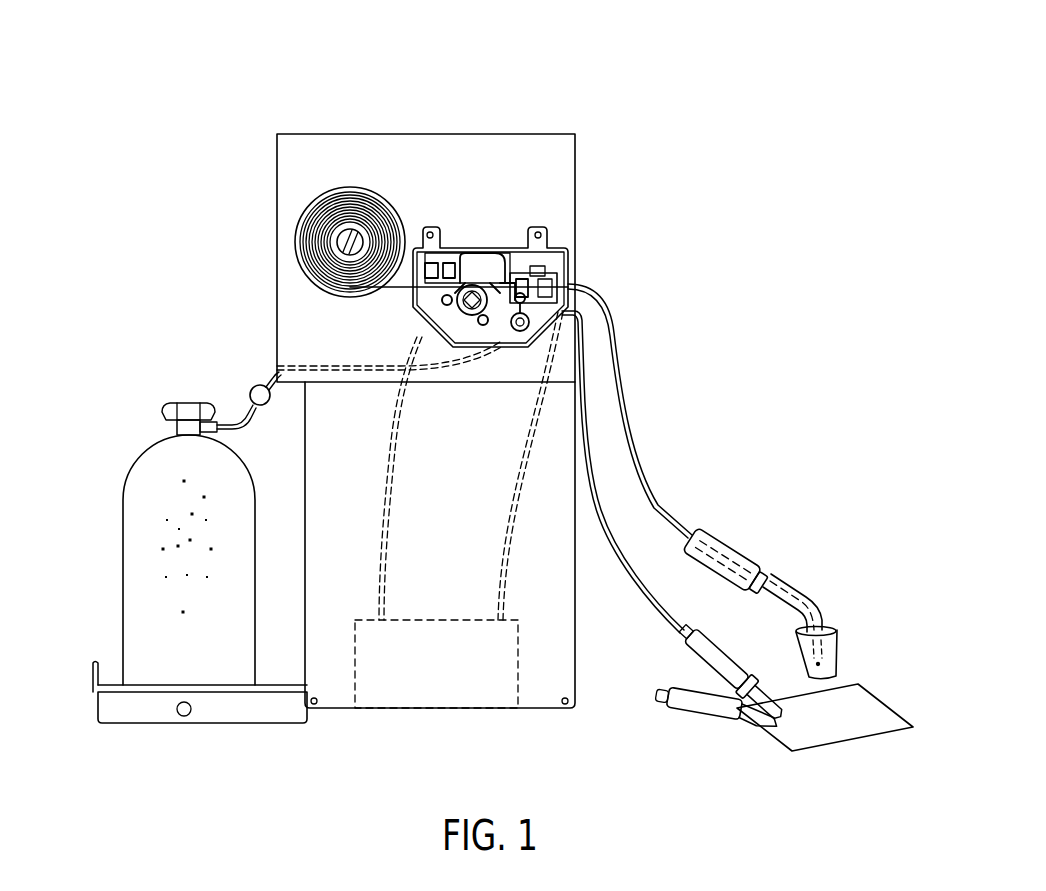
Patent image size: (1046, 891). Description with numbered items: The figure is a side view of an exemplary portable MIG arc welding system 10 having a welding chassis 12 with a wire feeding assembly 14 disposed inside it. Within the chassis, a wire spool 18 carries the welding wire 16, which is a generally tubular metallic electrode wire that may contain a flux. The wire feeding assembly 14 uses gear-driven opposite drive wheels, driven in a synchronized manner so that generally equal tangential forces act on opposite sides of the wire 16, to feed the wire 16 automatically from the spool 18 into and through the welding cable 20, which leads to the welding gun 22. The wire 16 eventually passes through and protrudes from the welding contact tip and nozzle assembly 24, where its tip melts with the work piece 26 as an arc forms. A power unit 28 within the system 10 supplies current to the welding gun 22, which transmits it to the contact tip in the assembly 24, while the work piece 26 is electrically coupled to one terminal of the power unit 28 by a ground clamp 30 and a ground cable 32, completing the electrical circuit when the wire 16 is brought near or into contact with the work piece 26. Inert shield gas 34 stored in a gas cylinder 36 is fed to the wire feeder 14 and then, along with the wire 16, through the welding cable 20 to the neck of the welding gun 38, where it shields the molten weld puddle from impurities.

The portable MIG arc welding system 10 is at (353, 58).
The welding chassis 12 is at (523, 133).
The wire feeding assembly 14 is at (463, 247).
The welding wire 16 is at (403, 289).
The wire spool 18 is at (345, 187).
The welding cable 20 is at (622, 355).
The welding gun 22 is at (760, 505).
The welding contact tip and nozzle assembly 24 is at (830, 626).
The work piece 26 is at (848, 730).
The power unit 28 is at (353, 660).
The ground clamp 30 is at (689, 706).
The ground cable 32 is at (637, 587).
The inert shield gas 34 is at (170, 497).
The gas cylinder 36 is at (256, 532).
The neck of the welding gun 38 is at (707, 530).